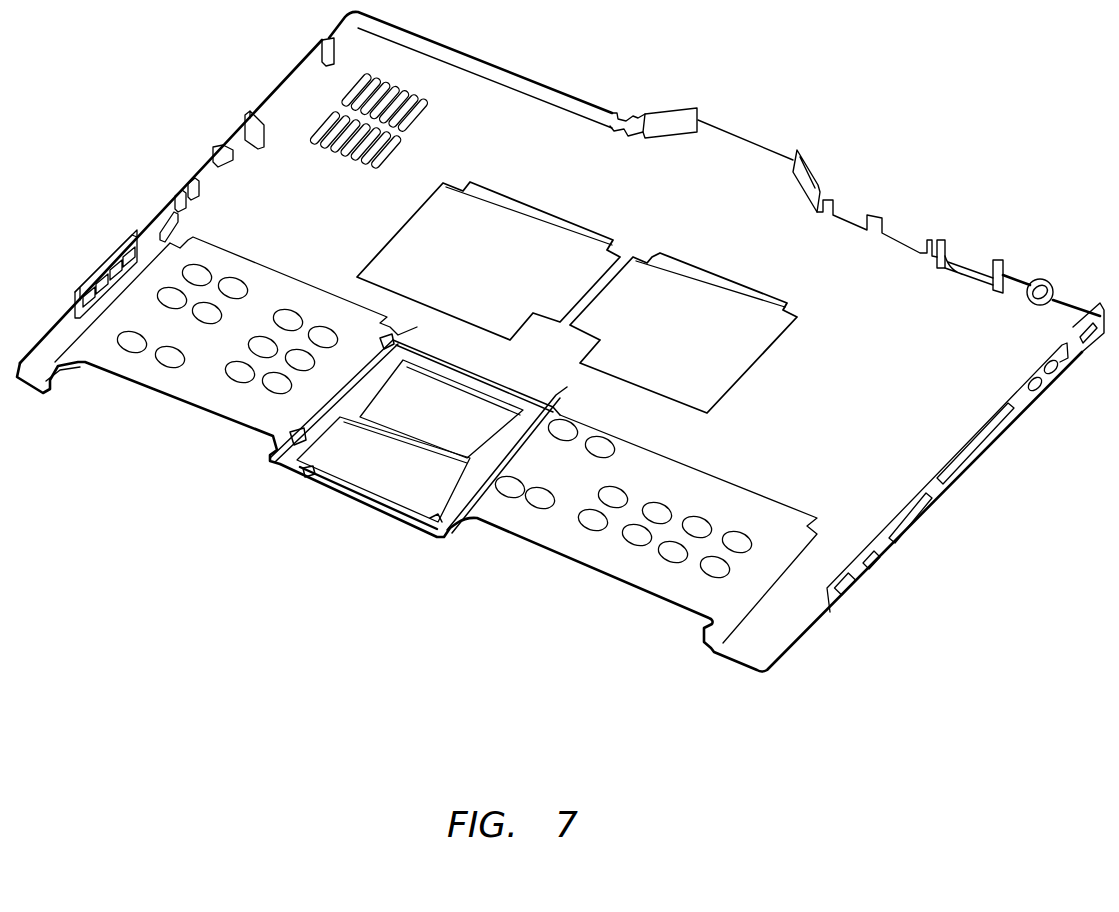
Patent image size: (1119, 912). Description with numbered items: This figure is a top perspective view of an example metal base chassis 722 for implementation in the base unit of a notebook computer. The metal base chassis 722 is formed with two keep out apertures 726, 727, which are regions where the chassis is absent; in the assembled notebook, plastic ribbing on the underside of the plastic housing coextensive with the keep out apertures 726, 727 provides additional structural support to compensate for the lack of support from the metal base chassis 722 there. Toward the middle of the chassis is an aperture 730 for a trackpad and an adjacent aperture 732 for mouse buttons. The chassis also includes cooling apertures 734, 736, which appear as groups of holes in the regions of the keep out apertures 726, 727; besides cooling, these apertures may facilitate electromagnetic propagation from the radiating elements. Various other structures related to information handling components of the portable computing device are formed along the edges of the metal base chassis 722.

The metal base chassis 722 is at (883, 565).
The keep out aperture 726 is at (260, 478).
The keep out aperture 727 is at (697, 647).
The aperture for a trackpad 730 is at (394, 424).
The aperture for mouse buttons 732 is at (354, 486).
The cooling aperture 734 is at (168, 360).
The cooling aperture 736 is at (591, 523).